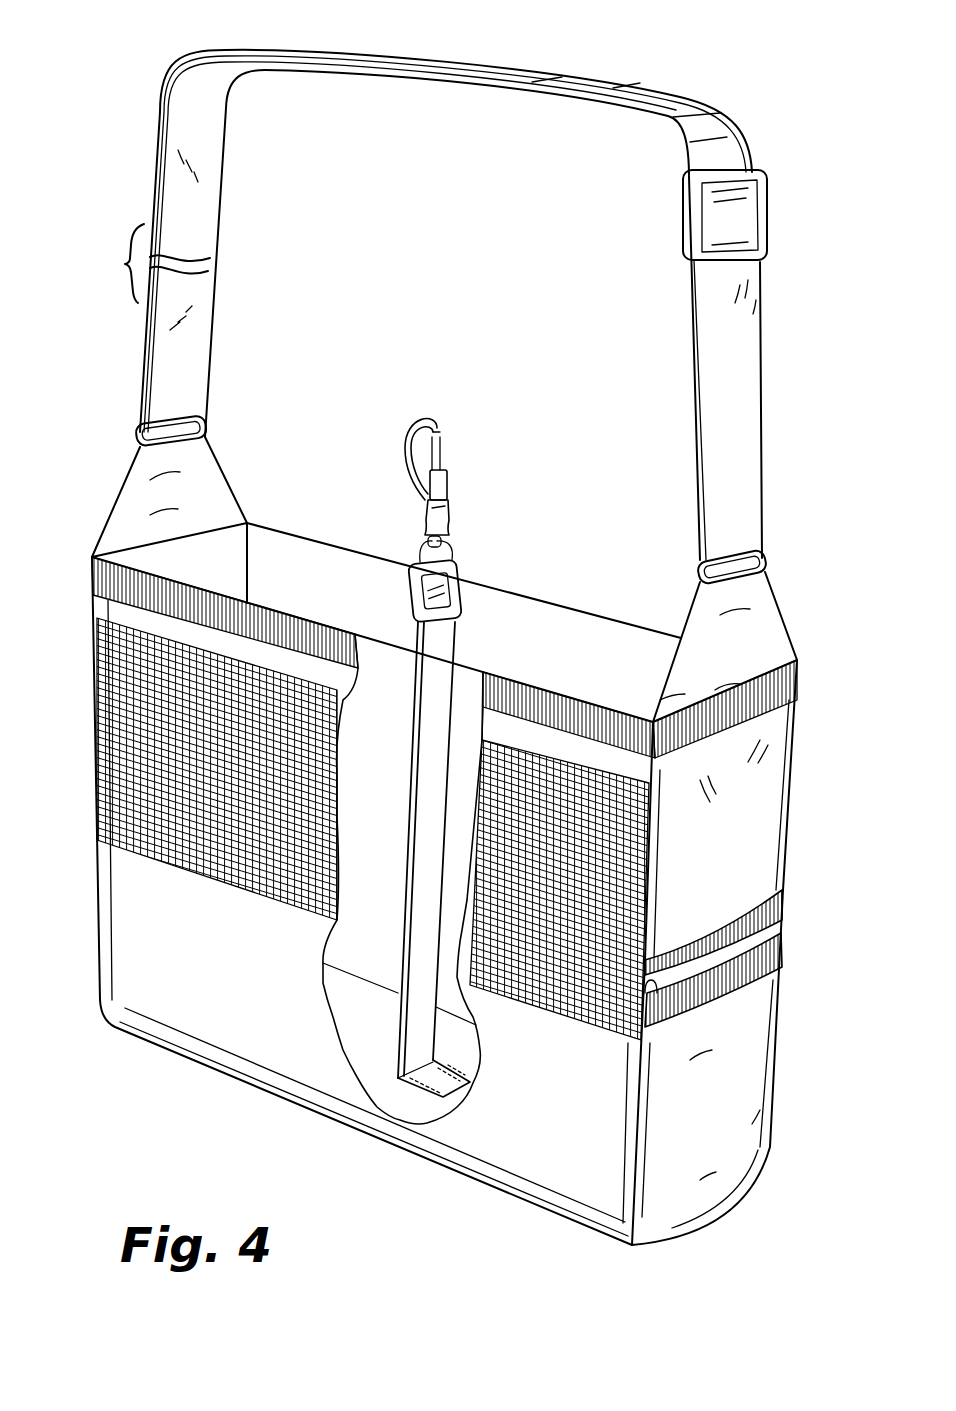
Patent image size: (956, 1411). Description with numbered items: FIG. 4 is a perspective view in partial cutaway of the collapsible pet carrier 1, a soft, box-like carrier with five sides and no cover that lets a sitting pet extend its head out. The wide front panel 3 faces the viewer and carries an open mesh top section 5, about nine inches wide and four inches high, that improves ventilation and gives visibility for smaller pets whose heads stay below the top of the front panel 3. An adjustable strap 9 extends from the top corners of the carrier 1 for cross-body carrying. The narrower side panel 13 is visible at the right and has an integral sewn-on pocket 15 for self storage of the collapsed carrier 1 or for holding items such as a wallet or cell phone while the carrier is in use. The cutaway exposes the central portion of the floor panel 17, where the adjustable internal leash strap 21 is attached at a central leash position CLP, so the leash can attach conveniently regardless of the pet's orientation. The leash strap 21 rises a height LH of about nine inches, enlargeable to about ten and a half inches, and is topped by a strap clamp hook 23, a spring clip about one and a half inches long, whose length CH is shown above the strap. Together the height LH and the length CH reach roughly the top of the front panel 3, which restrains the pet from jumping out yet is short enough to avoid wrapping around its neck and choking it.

The pet carrier 1 is at (66, 527).
The front panel 3 is at (150, 997).
The open mesh top section 5 is at (110, 720).
The adjustable strap 9 is at (752, 332).
The side panel 13 is at (782, 800).
The pocket 15 is at (740, 1080).
The floor panel 17 is at (372, 1075).
The internal leash strap 21 is at (442, 672).
The strap clamp hook 23 is at (447, 470).
The central leash position CLP is at (445, 1098).
The length of strap clamp hook CH is at (402, 617).
The height of leash strap LH is at (391, 612).